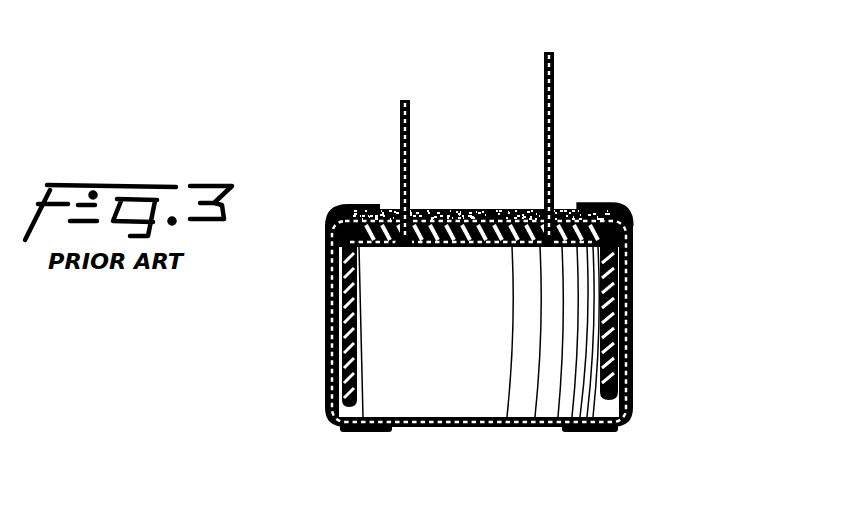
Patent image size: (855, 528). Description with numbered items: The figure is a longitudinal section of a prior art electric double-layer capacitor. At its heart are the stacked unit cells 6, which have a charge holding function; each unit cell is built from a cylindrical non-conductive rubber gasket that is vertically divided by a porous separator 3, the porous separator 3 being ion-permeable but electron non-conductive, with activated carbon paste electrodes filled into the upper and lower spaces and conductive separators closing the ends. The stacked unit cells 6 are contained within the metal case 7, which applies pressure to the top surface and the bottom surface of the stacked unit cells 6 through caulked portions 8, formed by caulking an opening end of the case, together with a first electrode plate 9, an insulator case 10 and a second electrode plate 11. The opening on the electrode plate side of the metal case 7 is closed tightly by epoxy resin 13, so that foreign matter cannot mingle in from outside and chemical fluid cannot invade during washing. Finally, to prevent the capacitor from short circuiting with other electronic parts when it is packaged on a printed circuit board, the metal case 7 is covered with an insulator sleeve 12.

The porous separator 3 is at (615, 205).
The stacked unit cells 6 is at (463, 383).
The metal case 7 is at (633, 258).
The caulked portions 8 is at (343, 208).
The first electrode plate 9 is at (553, 78).
The insulator case 10 is at (333, 258).
The second electrode plate 11 is at (398, 118).
The insulator sleeve 12 is at (633, 390).
The epoxy resin 13 is at (490, 205).